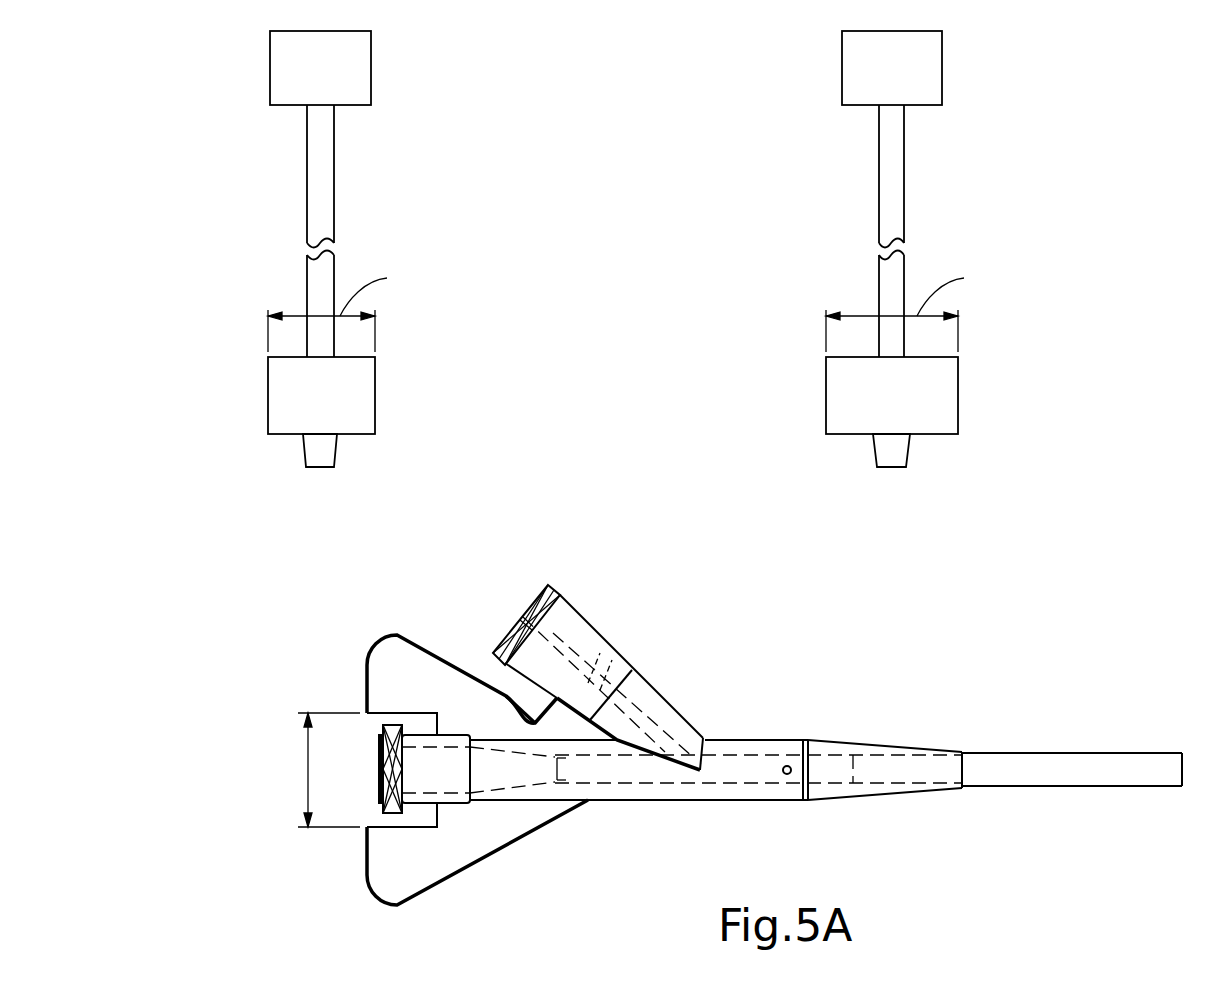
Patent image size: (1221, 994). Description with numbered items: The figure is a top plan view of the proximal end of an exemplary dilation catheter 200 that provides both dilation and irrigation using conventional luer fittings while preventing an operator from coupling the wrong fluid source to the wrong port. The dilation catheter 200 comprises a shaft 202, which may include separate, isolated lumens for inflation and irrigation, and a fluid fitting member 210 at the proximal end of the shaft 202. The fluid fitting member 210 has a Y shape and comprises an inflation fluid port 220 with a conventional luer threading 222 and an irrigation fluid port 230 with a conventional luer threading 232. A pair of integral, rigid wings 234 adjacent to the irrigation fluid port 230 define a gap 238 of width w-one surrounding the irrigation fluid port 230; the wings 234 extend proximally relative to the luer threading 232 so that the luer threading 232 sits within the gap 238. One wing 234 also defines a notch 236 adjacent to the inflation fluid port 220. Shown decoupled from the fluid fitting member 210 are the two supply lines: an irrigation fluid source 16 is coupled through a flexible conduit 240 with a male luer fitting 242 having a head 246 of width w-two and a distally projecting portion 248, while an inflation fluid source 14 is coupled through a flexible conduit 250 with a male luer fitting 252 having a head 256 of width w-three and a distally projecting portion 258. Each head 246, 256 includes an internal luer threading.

The inflation fluid source 14 is at (909, 84).
The irrigation fluid source 16 is at (337, 84).
The dilation catheter 200 is at (976, 650).
The shaft 202 is at (1100, 752).
The fluid fitting member 210 is at (765, 818).
The inflation fluid port 220 is at (625, 642).
The luer threading 222 is at (556, 590).
The irrigation fluid port 230 is at (454, 815).
The luer threading 232 is at (383, 790).
The wings 234 is at (373, 681).
The notch 236 is at (490, 672).
The gap 238 is at (415, 714).
The flexible conduit 240 is at (328, 193).
The male luer fitting 242 is at (404, 378).
The head 246 is at (376, 398).
The distally projecting portion 248 is at (333, 462).
The flexible conduit 250 is at (899, 193).
The male luer fitting 252 is at (968, 379).
The head 256 is at (959, 400).
The distally projecting portion 258 is at (906, 462).